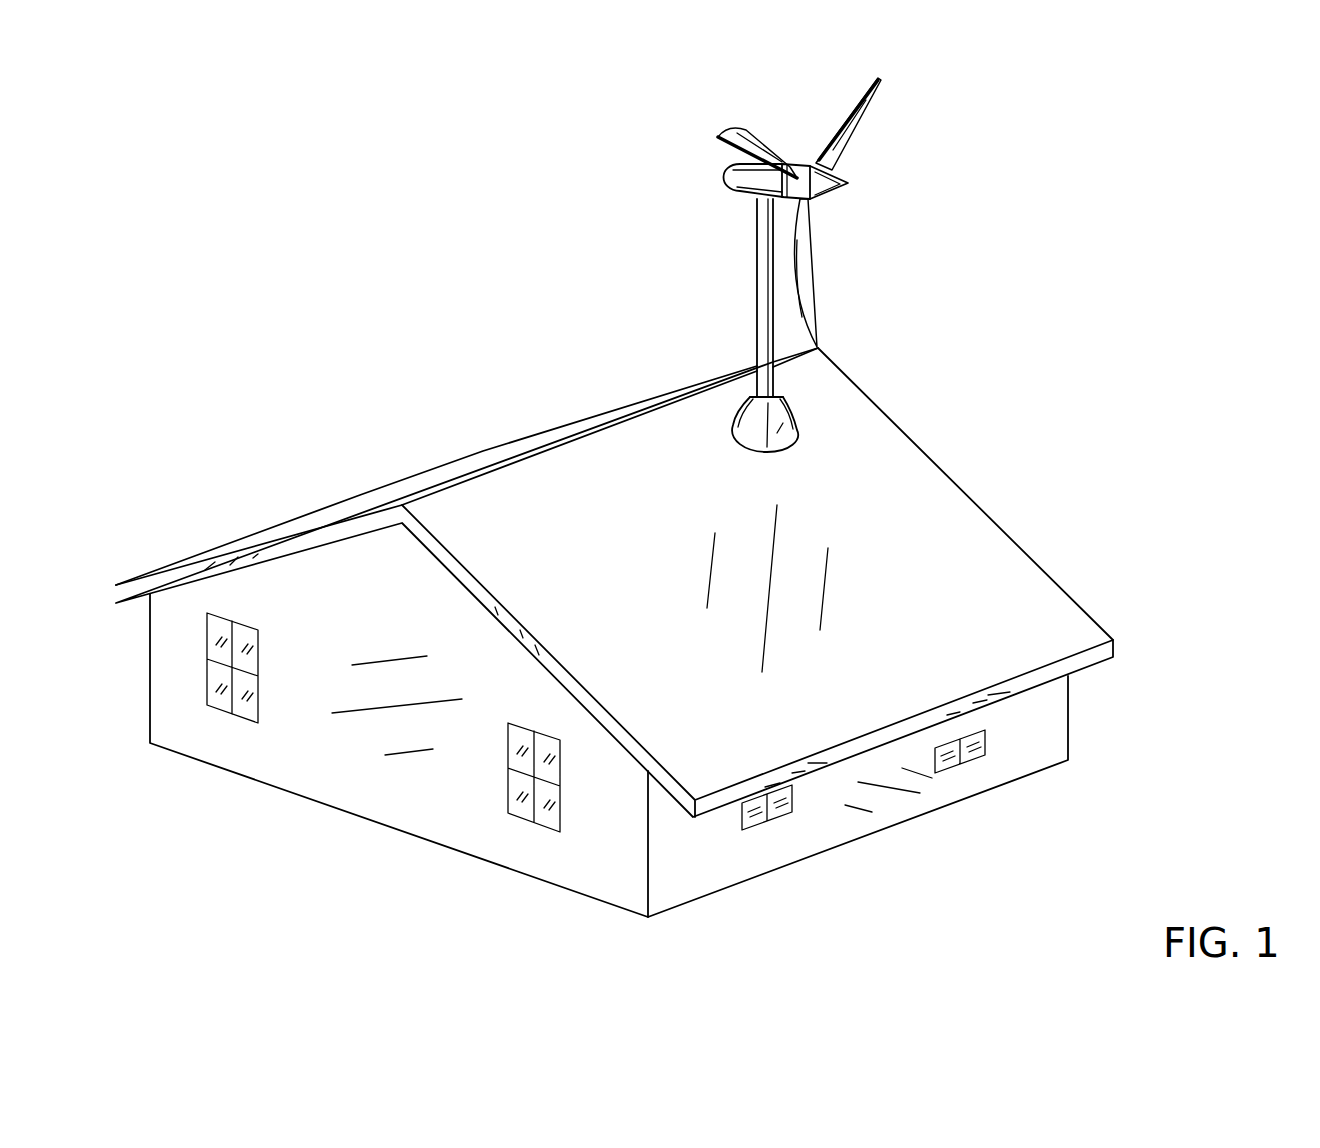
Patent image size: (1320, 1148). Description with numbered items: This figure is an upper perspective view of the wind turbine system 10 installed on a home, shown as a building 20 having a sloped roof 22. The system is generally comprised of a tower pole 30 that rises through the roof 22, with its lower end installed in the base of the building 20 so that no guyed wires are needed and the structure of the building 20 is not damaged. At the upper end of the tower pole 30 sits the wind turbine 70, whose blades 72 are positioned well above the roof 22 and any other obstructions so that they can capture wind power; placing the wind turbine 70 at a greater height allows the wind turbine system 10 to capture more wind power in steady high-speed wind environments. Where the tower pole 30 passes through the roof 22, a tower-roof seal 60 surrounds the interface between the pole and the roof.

The wind turbine system 10 is at (1088, 224).
The building 20 is at (1070, 728).
The roof 22 is at (1008, 582).
The tower pole 30 is at (762, 315).
The tower-roof seal 60 is at (780, 428).
The wind turbine 70 is at (797, 173).
The blades 72 is at (858, 127).